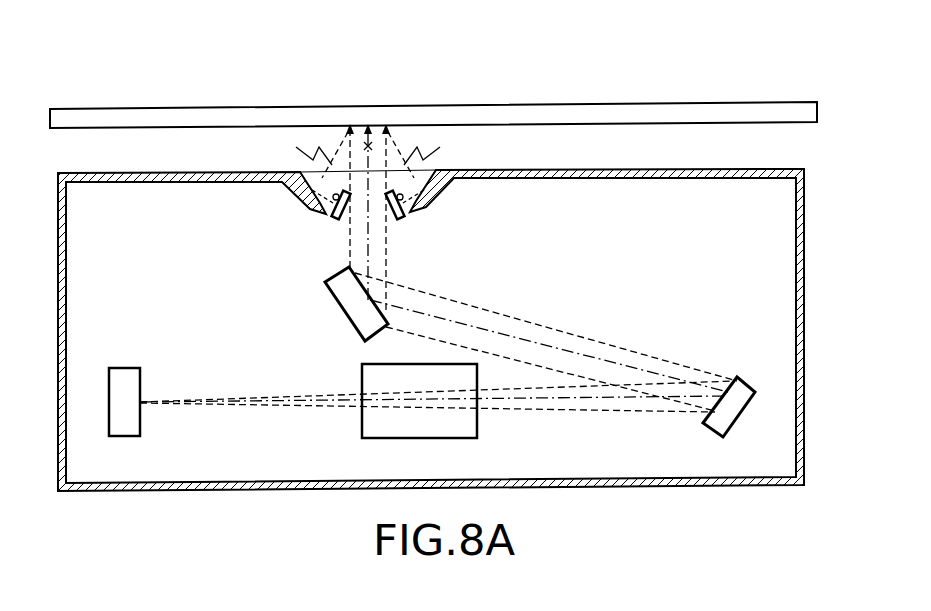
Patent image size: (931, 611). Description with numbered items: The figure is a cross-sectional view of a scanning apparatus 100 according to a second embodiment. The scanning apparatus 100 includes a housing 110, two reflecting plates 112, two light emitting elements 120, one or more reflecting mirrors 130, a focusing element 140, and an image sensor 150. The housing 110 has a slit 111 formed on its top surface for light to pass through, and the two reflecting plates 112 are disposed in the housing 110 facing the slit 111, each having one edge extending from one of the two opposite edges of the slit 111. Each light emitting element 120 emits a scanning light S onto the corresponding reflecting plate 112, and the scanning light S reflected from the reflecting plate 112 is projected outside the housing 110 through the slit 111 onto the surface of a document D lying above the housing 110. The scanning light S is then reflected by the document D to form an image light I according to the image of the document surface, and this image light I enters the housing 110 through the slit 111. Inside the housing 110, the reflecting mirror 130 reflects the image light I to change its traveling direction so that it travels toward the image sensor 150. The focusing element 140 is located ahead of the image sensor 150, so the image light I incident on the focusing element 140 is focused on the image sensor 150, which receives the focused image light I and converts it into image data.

The scanning apparatus 100 is at (160, 41).
The housing 110 is at (806, 318).
The slit 111 is at (352, 224).
The reflecting plate 112 is at (320, 183).
The light emitting element 120 is at (318, 162).
The reflecting mirror 130 is at (352, 293).
The focusing element 140 is at (460, 432).
The image sensor 150 is at (122, 368).
The document D is at (745, 107).
The scanning light S is at (376, 217).
The image light I is at (375, 245).